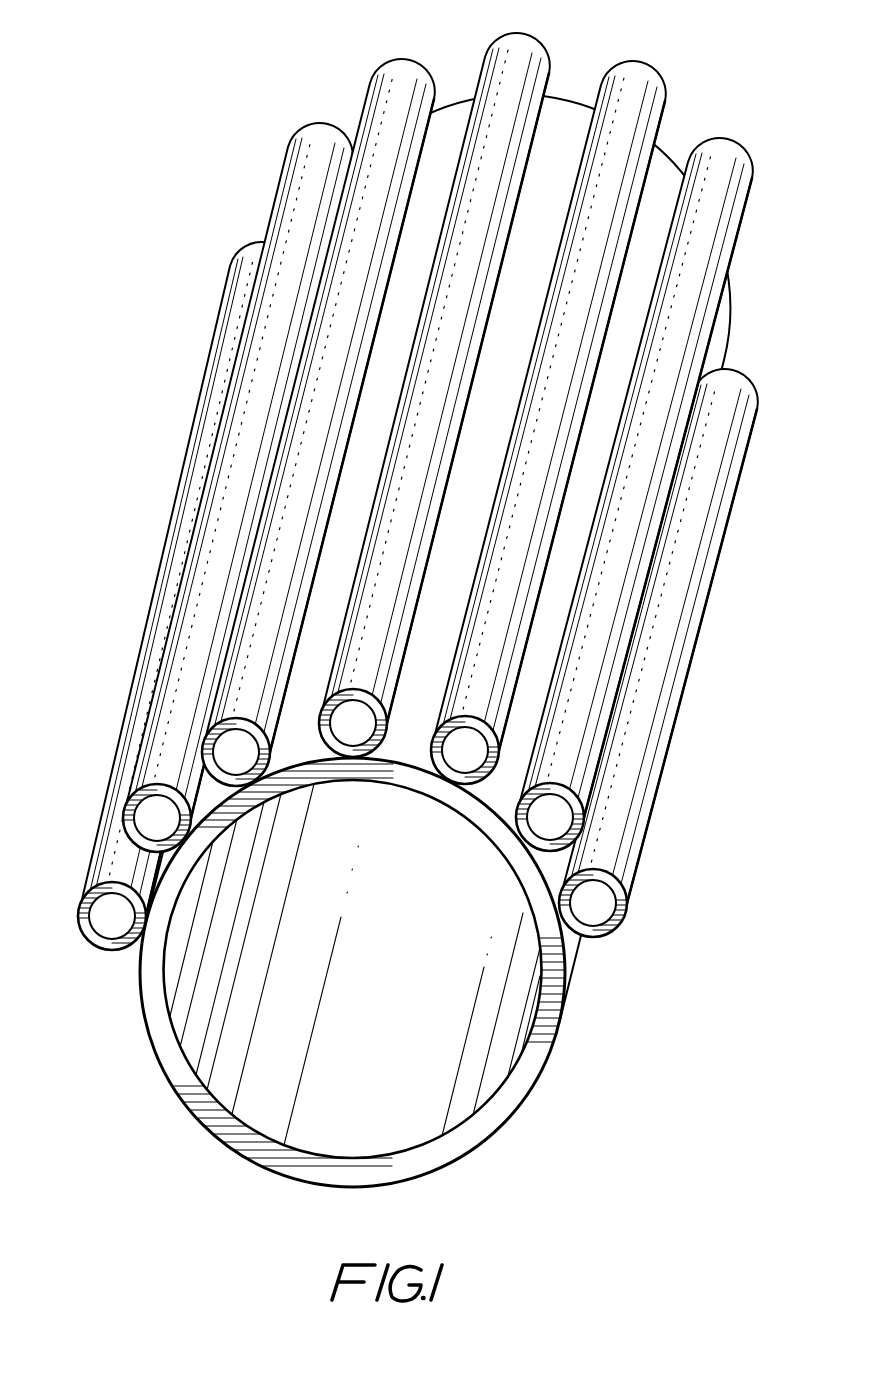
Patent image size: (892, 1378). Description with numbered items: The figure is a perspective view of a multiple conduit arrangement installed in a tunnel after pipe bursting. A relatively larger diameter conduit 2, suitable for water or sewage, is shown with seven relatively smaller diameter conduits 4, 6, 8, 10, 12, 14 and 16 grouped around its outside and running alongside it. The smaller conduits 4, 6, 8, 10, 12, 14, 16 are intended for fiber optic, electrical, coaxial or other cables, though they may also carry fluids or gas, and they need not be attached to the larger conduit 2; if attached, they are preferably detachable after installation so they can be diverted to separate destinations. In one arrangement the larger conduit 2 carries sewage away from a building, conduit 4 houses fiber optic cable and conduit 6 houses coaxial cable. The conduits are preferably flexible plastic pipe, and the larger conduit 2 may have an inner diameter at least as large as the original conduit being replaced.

The larger diameter conduit 2 is at (559, 1042).
The smaller diameter conduit 4 is at (627, 908).
The smaller diameter conduit 6 is at (548, 783).
The smaller diameter conduit 8 is at (467, 716).
The smaller diameter conduit 10 is at (356, 692).
The smaller diameter conduit 12 is at (228, 722).
The smaller diameter conduit 14 is at (138, 780).
The smaller diameter conduit 16 is at (98, 946).